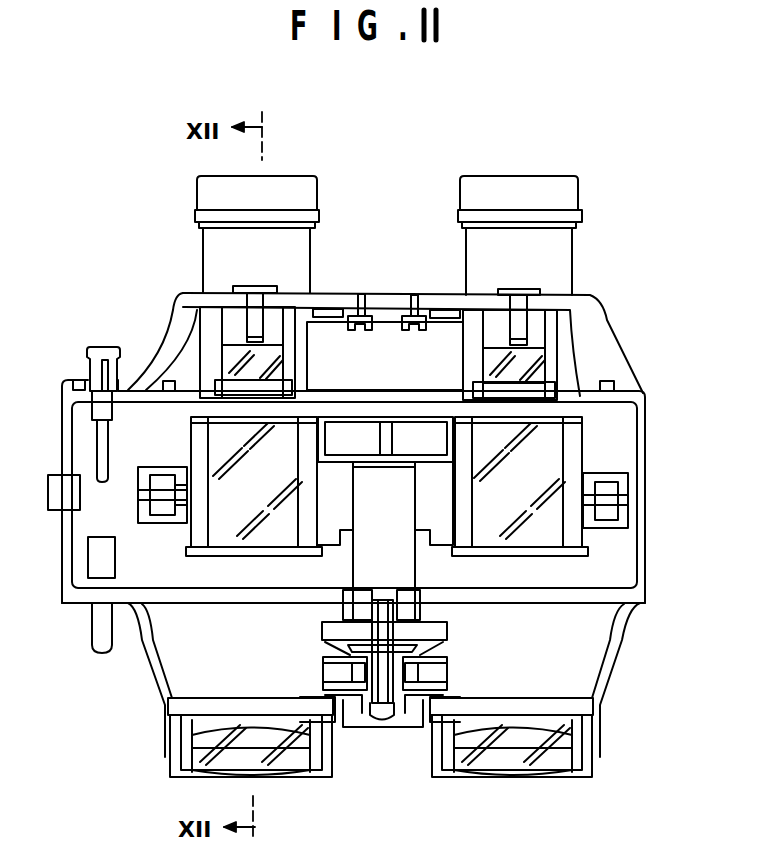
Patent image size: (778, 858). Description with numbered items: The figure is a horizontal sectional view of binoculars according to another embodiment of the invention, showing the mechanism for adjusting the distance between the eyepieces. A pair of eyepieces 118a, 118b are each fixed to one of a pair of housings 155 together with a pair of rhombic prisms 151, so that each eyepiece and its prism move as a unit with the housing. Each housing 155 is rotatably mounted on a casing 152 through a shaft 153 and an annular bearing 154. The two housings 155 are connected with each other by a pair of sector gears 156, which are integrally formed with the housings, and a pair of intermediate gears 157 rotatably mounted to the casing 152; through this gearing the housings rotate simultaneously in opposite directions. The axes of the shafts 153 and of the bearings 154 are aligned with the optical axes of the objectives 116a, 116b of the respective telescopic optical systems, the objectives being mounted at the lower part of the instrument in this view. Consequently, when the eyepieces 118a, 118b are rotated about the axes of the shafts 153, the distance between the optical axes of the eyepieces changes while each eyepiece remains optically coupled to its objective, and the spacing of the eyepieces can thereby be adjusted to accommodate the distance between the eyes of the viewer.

The eyepiece 118b is at (284, 190).
The eyepiece 118a is at (548, 205).
The rhombic prism 151 is at (228, 360).
The casing 152 is at (583, 303).
The shaft 153 is at (250, 298).
The annular bearing 154 is at (215, 386).
The housing 155 is at (208, 322).
The sector gear 156 is at (455, 318).
The intermediate gear 157 is at (412, 313).
The objective 116b is at (287, 757).
The objective 116a is at (520, 753).